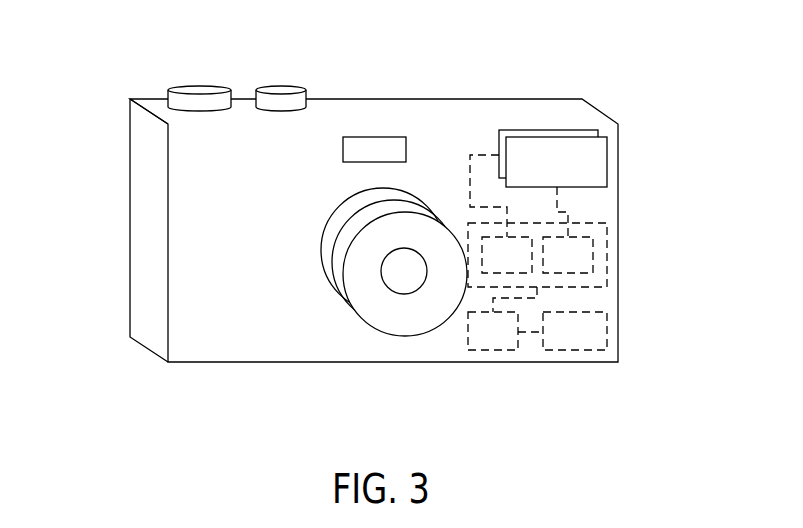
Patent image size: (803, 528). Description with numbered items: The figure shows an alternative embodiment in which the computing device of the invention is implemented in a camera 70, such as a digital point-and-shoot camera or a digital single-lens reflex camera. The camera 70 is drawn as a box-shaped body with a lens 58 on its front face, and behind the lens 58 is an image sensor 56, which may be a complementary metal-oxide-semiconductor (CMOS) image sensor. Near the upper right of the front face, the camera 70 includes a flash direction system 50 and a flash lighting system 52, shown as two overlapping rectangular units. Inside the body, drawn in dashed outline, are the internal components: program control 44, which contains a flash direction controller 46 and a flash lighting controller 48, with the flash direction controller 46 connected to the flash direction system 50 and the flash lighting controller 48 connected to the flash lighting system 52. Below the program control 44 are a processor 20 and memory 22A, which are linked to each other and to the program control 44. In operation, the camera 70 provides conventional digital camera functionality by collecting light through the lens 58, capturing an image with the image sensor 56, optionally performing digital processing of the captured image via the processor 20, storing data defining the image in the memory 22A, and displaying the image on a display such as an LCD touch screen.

The camera 70 is at (117, 73).
The flash direction system 50 is at (588, 130).
The flash lighting system 52 is at (608, 160).
The program control 44 is at (607, 226).
The flash direction controller 46 is at (494, 268).
The flash lighting controller 48 is at (555, 268).
The processor 20 is at (480, 344).
The memory 22A is at (555, 344).
The image sensor 56 is at (397, 292).
The lens 58 is at (353, 313).